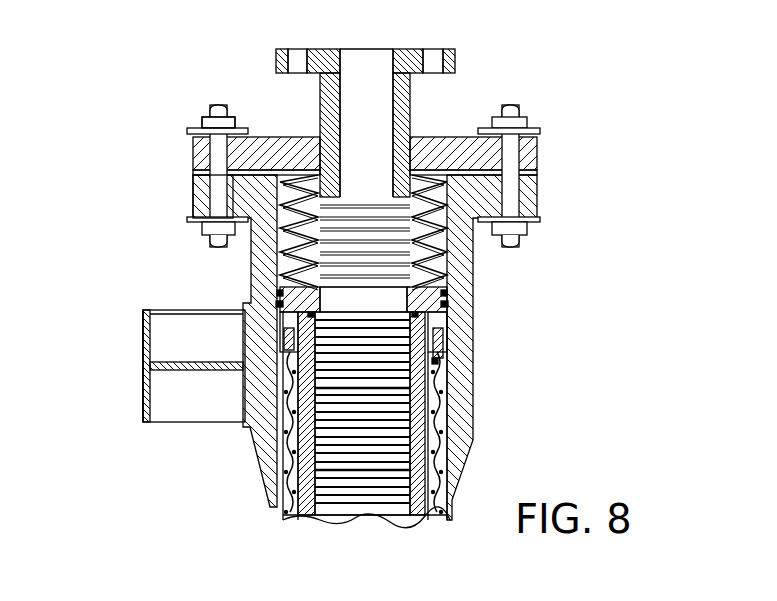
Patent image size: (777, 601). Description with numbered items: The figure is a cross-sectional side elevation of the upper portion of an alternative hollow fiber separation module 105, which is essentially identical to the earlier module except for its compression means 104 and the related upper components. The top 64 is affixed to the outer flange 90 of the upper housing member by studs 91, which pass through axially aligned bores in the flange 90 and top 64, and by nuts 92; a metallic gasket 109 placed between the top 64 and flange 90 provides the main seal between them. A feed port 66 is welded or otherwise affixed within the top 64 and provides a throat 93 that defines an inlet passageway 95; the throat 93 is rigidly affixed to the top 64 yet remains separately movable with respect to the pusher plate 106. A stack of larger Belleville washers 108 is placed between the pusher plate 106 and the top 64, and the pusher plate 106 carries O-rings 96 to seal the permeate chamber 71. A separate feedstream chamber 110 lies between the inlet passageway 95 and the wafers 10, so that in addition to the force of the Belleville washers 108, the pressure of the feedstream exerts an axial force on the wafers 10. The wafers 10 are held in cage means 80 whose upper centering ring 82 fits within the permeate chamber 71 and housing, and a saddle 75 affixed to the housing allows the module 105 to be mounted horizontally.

The wafers 10 is at (410, 524).
The top 64 is at (540, 155).
The feed port 66 is at (457, 57).
The permeate chamber 71 is at (283, 322).
The saddle 75 is at (143, 392).
The cage means 80 is at (283, 508).
The upper centering ring 82 is at (445, 340).
The outer flange 90 is at (203, 193).
The studs 91 is at (218, 149).
The nuts 92 is at (200, 121).
The throat 93 is at (400, 88).
The inlet passageway 95 is at (362, 67).
The O-rings 96 is at (278, 305).
The compression means 104 is at (505, 278).
The module 105 is at (130, 454).
The pusher plate 106 is at (445, 322).
The Belleville washers 108 is at (445, 230).
The metallic gasket 109 is at (488, 199).
The feedstream chamber 110 is at (363, 222).